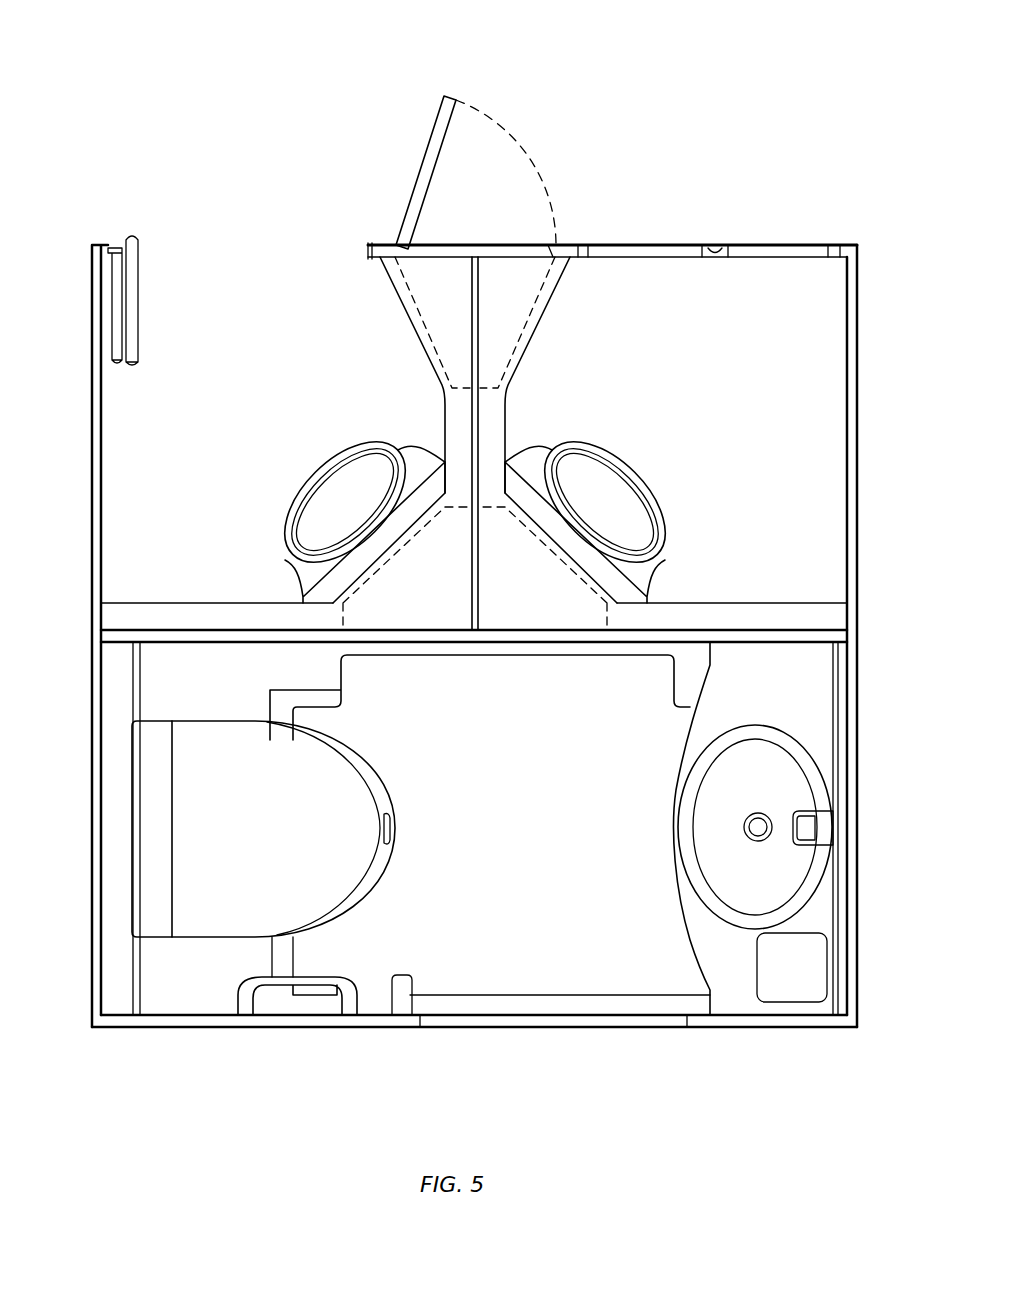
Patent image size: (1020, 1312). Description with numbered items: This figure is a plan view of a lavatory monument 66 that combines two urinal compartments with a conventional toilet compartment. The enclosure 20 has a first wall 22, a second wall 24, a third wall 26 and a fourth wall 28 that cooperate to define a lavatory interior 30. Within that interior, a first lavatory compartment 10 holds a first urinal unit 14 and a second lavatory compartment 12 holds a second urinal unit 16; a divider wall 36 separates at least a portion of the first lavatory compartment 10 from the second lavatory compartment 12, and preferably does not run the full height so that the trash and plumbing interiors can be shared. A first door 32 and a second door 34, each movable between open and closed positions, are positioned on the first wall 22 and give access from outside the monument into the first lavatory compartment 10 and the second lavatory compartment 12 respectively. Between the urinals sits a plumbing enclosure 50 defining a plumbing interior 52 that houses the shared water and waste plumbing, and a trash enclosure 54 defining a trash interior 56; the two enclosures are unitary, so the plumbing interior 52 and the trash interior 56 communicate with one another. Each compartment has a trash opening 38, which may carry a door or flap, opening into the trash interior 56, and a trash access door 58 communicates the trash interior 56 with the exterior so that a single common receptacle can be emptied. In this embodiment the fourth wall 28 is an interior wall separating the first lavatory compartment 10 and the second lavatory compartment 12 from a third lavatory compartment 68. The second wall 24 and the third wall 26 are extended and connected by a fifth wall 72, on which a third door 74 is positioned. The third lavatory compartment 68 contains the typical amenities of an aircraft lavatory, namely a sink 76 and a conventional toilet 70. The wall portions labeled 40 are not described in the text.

The first lavatory compartment 10 is at (130, 450).
The second lavatory compartment 12 is at (820, 355).
The first urinal unit 14 is at (330, 525).
The second urinal unit 16 is at (625, 525).
The enclosure 20 is at (95, 648).
The first wall 22 is at (548, 245).
The second wall 24 is at (862, 480).
The third wall 26 is at (95, 400).
The fourth wall 28 is at (502, 632).
The lavatory interior 30 is at (140, 564).
The first door 32 is at (775, 245).
The second door 34 is at (137, 268).
The divider wall 36 is at (450, 620).
The trash opening 38 is at (430, 355).
The angled wall 40 is at (415, 283).
The plumbing enclosure 50 is at (513, 585).
The plumbing interior 52 is at (393, 622).
The trash enclosure 54 is at (503, 272).
The trash interior 56 is at (445, 305).
The trash access door 58 is at (424, 170).
The lavatory monument 66 is at (103, 144).
The third lavatory compartment 68 is at (640, 960).
The toilet 70 is at (276, 846).
The fifth wall 72 is at (305, 1027).
The third door 74 is at (563, 1027).
The sink 76 is at (780, 870).